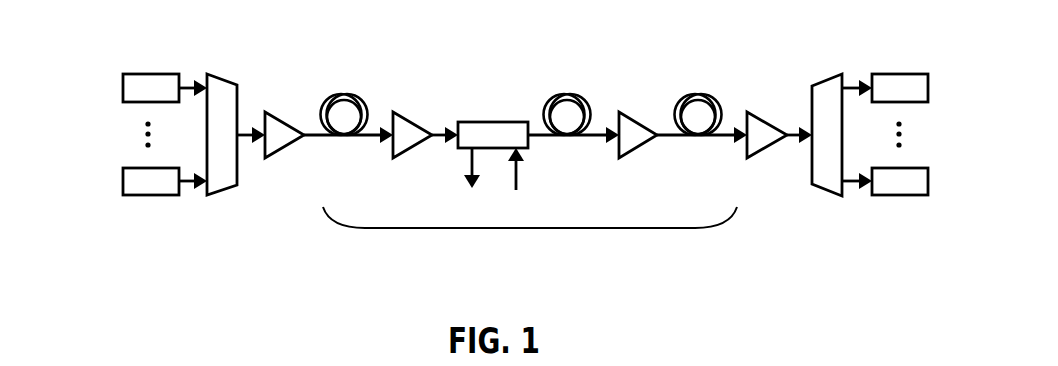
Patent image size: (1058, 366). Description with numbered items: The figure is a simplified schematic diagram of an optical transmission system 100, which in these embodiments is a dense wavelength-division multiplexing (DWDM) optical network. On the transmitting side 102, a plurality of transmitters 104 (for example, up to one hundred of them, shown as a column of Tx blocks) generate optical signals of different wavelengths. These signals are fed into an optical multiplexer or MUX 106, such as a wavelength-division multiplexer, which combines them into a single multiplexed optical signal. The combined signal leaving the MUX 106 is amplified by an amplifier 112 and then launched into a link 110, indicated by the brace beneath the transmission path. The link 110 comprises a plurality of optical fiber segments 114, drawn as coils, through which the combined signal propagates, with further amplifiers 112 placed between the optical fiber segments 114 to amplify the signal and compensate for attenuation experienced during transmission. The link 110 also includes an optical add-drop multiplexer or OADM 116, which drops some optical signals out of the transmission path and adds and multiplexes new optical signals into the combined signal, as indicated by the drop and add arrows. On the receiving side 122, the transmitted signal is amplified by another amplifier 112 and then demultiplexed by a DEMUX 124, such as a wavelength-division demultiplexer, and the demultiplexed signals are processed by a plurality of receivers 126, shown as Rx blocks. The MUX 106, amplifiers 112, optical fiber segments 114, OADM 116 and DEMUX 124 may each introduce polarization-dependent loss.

The optical transmission system 100 is at (117, 32).
The transmitting side 102 is at (164, 233).
The transmitters 104 is at (123, 78).
The optical multiplexer (MUX) 106 is at (225, 74).
The link 110 is at (530, 228).
The amplifier 112 is at (288, 125).
The optical fiber segments 114 is at (359, 93).
The optical add-drop multiplexer (OADM) 116 is at (497, 121).
The receiving side 122 is at (844, 232).
The DEMUX 124 is at (828, 73).
The receivers 126 is at (910, 73).